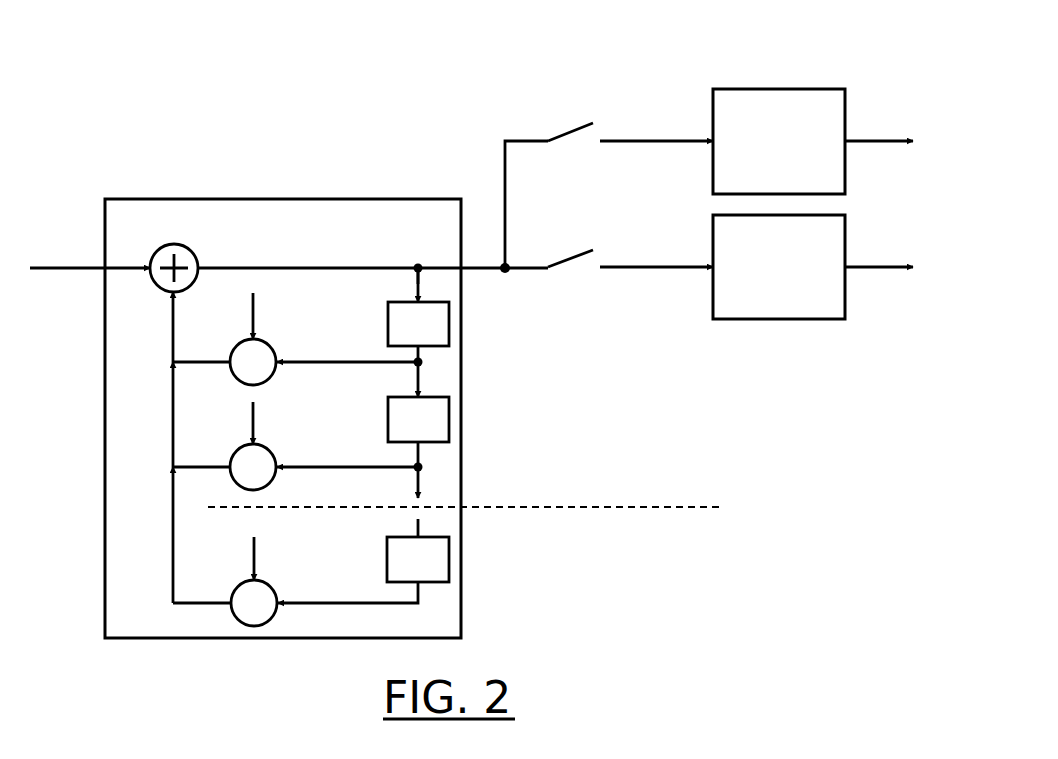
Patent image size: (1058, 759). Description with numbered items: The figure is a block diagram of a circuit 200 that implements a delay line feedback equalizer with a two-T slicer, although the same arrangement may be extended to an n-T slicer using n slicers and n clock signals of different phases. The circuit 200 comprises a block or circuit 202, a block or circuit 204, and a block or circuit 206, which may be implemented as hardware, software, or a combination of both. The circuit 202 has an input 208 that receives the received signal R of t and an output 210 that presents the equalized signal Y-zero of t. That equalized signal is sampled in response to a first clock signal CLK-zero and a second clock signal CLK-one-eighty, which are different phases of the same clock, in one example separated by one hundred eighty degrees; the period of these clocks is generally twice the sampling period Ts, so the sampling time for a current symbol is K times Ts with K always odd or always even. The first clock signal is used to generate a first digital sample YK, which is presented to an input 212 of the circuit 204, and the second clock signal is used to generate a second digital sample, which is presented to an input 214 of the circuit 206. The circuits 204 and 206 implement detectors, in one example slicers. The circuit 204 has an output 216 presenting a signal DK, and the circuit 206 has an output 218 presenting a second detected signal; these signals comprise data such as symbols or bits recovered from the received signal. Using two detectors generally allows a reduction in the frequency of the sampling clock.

The circuit 200 is at (337, 38).
The block (or circuit) 202 is at (206, 198).
The block (or circuit) 204 is at (787, 320).
The block (or circuit) 206 is at (787, 88).
The input 208 is at (102, 270).
The output 210 is at (465, 270).
The input 212 is at (708, 273).
The input 214 is at (708, 148).
The output 216 is at (850, 271).
The output 218 is at (850, 145).